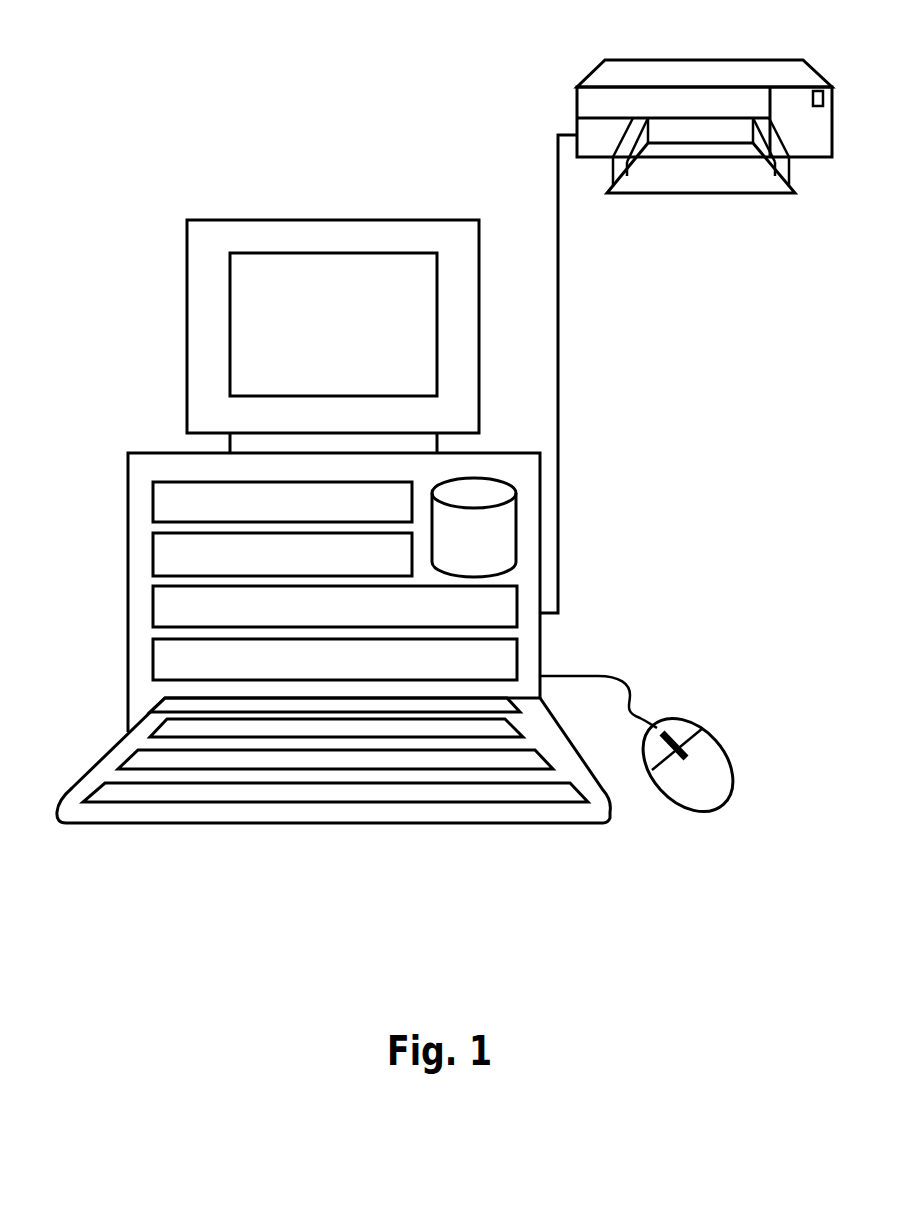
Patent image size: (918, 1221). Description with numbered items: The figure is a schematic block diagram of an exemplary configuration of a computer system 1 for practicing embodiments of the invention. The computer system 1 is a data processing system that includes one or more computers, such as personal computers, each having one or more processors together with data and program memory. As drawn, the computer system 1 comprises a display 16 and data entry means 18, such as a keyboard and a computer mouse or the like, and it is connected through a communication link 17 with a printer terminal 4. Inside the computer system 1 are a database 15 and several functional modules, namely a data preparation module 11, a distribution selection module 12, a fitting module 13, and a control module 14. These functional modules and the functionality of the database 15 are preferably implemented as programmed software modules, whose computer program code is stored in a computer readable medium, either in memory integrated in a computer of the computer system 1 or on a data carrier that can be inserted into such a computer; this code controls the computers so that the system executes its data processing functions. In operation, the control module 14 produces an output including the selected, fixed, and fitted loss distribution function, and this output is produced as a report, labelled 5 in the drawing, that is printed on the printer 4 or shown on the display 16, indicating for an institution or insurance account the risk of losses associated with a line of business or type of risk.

The computer system 1 is at (480, 838).
The printer terminal 4 is at (588, 75).
The report 5 is at (743, 193).
The data preparation module 11 is at (163, 660).
The distribution selection module 12 is at (163, 605).
The fitting module 13 is at (163, 552).
The control module 14 is at (163, 500).
The database 15 is at (508, 543).
The display 16 is at (254, 327).
The communication link 17 is at (558, 200).
The data entry means 18 is at (122, 814).